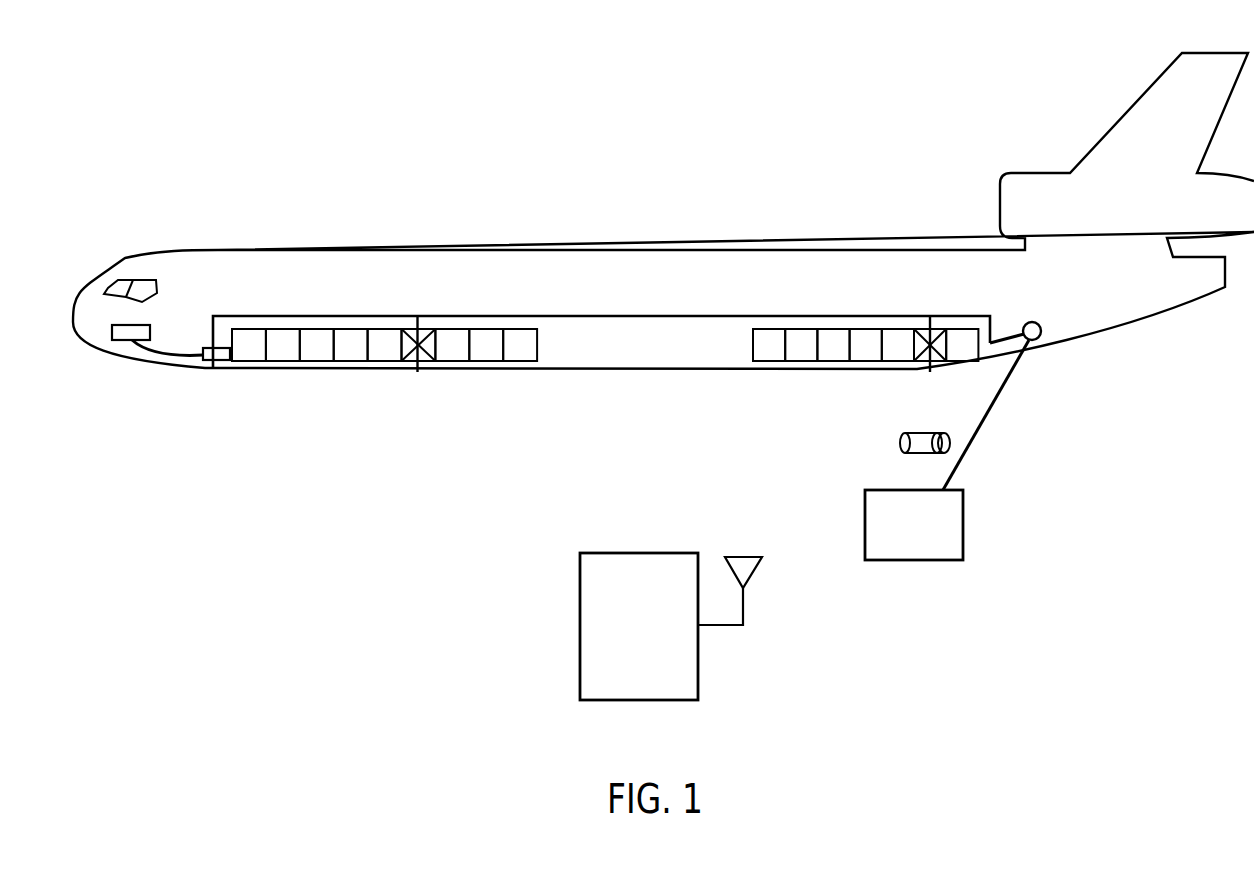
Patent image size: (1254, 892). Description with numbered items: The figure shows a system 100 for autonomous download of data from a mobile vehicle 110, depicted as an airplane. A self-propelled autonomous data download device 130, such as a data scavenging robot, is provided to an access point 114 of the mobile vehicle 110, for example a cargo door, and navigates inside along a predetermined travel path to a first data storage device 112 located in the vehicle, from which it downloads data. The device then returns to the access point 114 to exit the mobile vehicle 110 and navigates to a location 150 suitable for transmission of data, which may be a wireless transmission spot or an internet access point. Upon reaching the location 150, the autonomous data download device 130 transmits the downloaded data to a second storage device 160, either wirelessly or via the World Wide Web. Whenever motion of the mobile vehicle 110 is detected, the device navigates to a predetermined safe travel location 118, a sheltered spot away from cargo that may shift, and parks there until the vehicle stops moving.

The system for autonomous download of data 100 is at (571, 129).
The mobile vehicle 110 is at (407, 250).
The first data storage device 112 is at (123, 340).
The access point 114 is at (418, 372).
The predetermined safe travel location 118 is at (215, 363).
The autonomous data download device 130 is at (899, 442).
The location suitable for transmission of data 150 is at (923, 560).
The second storage device 160 is at (632, 553).